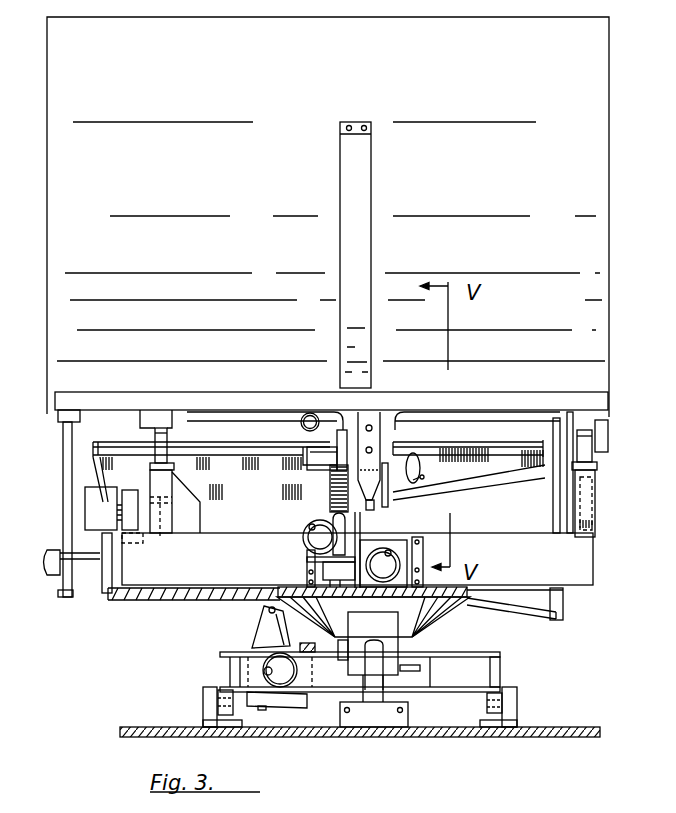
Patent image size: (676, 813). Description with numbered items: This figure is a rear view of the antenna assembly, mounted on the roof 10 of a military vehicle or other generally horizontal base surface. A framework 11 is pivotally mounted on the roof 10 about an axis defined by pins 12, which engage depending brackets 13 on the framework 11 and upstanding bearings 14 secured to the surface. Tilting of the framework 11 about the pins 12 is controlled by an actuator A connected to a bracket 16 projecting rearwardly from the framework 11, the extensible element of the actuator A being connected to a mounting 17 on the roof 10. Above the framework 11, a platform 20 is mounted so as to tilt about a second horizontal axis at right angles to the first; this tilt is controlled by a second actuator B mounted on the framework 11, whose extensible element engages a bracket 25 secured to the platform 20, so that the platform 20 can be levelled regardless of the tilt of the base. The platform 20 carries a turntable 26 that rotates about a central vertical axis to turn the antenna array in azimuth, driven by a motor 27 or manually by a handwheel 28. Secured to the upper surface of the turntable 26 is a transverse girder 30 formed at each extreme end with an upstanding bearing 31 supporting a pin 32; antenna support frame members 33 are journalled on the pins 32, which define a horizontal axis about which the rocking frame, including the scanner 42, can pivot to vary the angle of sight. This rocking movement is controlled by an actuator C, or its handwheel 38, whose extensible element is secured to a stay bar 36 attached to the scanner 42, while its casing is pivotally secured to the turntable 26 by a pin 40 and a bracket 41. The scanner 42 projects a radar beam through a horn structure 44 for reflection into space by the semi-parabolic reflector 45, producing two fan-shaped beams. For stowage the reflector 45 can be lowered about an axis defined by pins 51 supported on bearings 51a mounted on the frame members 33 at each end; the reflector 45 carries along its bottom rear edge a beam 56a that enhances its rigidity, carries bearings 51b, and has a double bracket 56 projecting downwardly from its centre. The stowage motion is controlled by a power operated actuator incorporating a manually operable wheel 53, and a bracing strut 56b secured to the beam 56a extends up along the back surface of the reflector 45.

The roof 10 is at (578, 727).
The framework 11 is at (485, 666).
The pins 12 is at (205, 705).
The depending brackets 13 is at (222, 697).
The upstanding bearings 14 is at (205, 725).
The bracket 16 is at (410, 672).
The mounting 17 is at (372, 722).
The platform 20 is at (448, 613).
The bracket 25 is at (265, 610).
The turntable 26 is at (470, 603).
The motor 27 is at (403, 543).
The handwheel 28 is at (376, 552).
The transverse girder 30 is at (582, 567).
The upstanding bearing 31 is at (138, 497).
The pin 32 is at (160, 537).
The frame members 33 is at (160, 473).
The stay bar 36 is at (303, 472).
The handwheel 38 is at (305, 541).
The pin 40 is at (306, 572).
The bracket 41 is at (355, 585).
The scanner 42 is at (537, 605).
The horn structure 44 is at (480, 443).
The semi-parabolic reflector 45 is at (160, 170).
The pins 51 is at (173, 440).
The bearings 51a is at (170, 463).
The bearings 51b is at (153, 433).
The manually operable wheel 53 is at (412, 483).
The double bracket 56 is at (383, 432).
The beam 56a is at (237, 397).
The bracing strut 56b is at (362, 185).
The actuator A is at (396, 633).
The actuator B is at (250, 648).
The actuator C is at (305, 515).